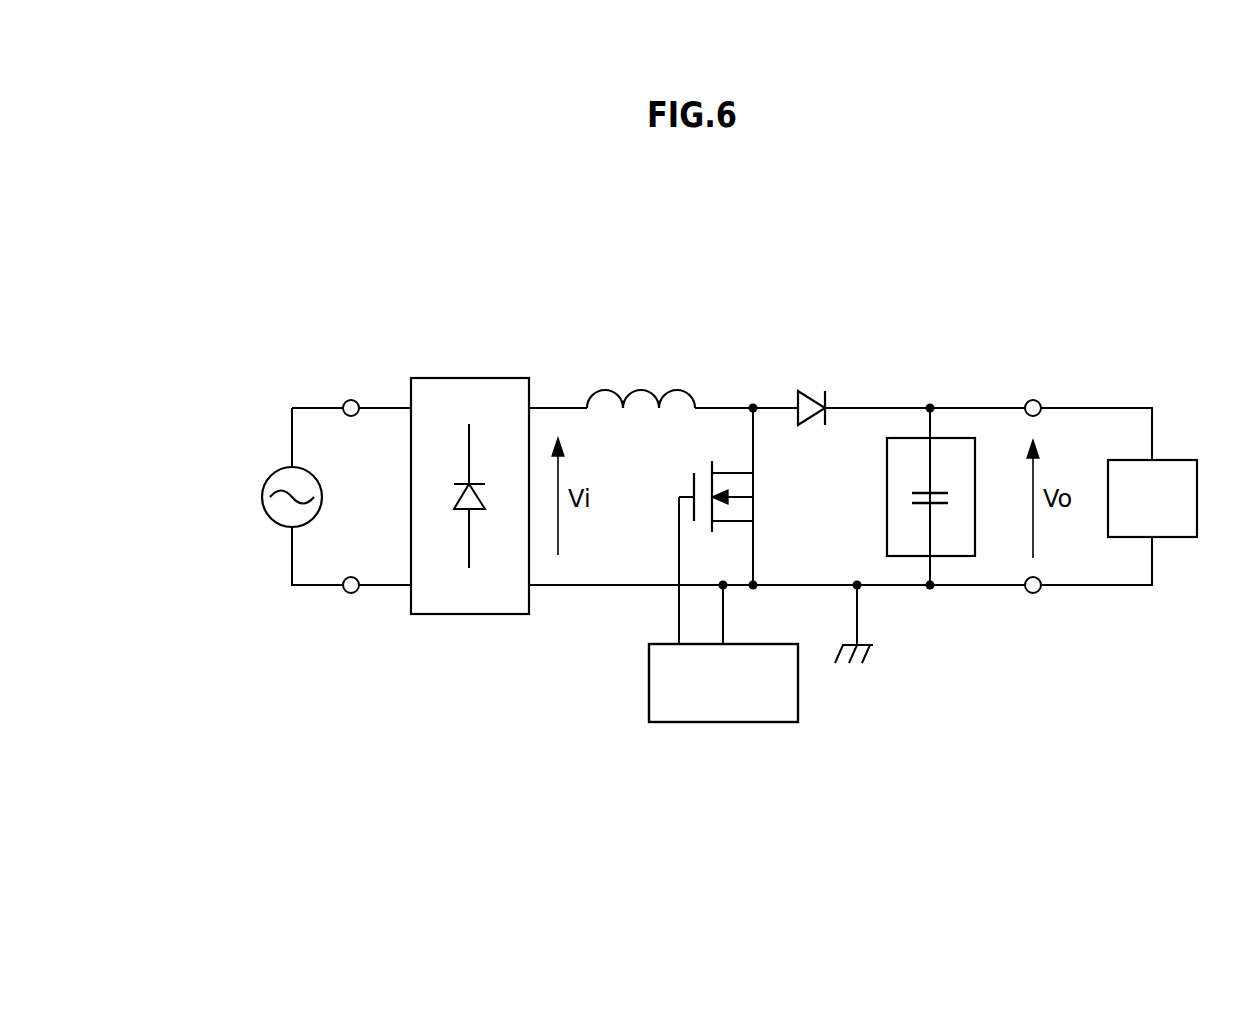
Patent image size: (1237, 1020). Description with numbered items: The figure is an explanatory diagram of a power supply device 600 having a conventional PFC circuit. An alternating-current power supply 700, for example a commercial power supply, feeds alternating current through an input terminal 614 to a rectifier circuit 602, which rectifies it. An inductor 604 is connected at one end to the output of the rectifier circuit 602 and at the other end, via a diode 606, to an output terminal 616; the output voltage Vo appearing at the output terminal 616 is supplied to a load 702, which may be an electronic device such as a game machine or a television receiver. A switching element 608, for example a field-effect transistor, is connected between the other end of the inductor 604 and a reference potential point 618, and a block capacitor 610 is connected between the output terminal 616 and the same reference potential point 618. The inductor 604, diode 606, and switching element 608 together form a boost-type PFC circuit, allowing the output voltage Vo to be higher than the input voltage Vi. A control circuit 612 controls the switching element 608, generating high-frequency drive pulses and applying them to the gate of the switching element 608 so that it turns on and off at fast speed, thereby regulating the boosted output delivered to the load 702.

The power supply device 600 is at (775, 309).
The rectifier circuit 602 is at (497, 377).
The inductor 604 is at (679, 390).
The diode 606 is at (813, 390).
The switching element 608 is at (702, 463).
The block capacitor 610 is at (886, 472).
The control circuit 612 is at (765, 723).
The input terminal 614 is at (351, 400).
The output terminal 616 is at (1033, 400).
The reference potential point 618 is at (807, 584).
The alternating-current power supply 700 is at (270, 473).
The load 702 is at (1178, 459).